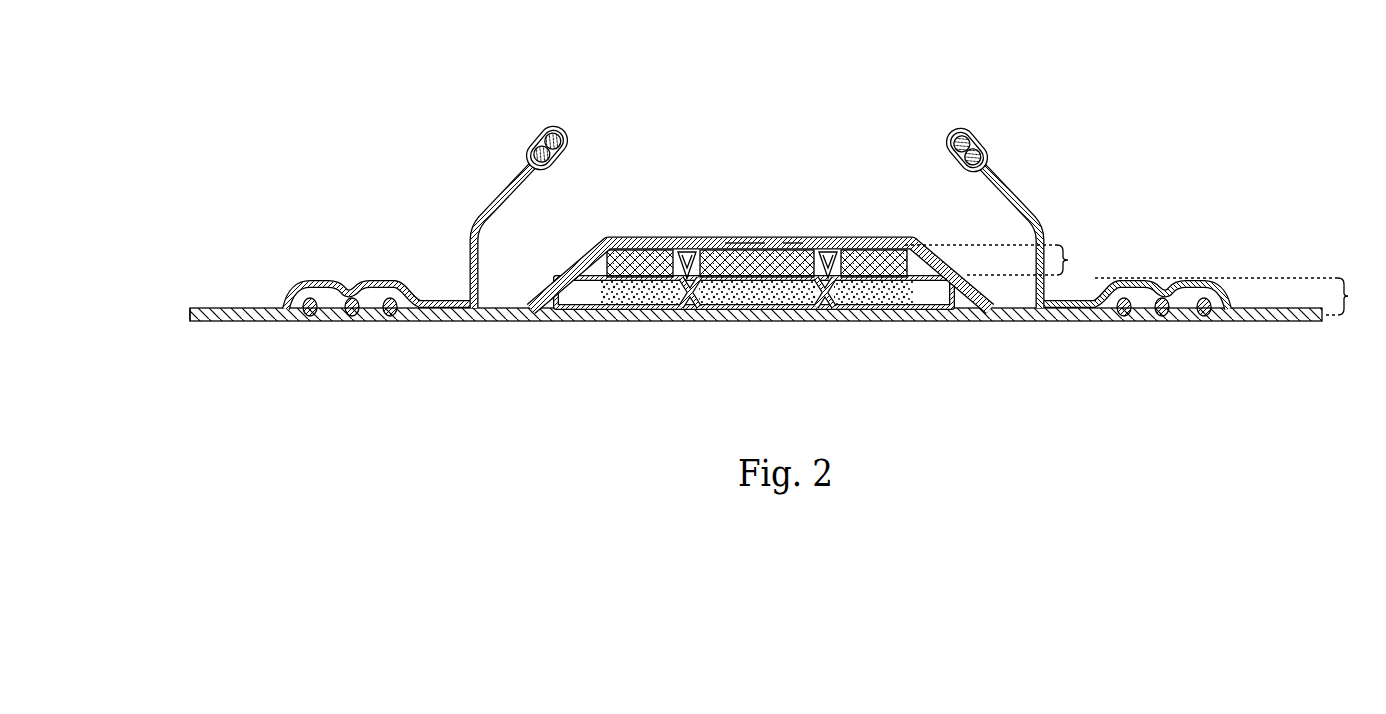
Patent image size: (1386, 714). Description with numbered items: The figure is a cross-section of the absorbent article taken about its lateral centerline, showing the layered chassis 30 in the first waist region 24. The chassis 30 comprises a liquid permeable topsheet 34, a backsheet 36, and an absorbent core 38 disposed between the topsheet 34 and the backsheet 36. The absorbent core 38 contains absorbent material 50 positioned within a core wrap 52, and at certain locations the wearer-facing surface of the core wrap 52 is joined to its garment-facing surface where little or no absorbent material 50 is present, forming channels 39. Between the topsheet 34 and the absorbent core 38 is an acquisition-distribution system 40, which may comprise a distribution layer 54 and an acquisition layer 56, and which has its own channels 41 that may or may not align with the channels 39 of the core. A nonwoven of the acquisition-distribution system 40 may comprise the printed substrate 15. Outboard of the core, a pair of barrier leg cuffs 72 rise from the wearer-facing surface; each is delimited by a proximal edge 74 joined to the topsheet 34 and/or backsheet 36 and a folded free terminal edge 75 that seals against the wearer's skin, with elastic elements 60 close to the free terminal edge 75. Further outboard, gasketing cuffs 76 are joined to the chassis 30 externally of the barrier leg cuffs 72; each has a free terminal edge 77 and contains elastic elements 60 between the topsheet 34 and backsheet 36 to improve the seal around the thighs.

The chassis 30 is at (848, 125).
The backsheet 36 is at (537, 322).
The free terminal edge 77 is at (190, 306).
The gasketing cuff 76 is at (322, 275).
The proximal edge 74 is at (438, 302).
The barrier leg cuff 72 is at (491, 172).
The free terminal edge 75 is at (577, 130).
The elastic element 60 is at (553, 141).
The absorbent material 50 is at (643, 322).
The core wrap 52 is at (938, 322).
The channel 39 is at (693, 322).
The distribution layer 54 is at (672, 250).
The channel 41 is at (693, 250).
The topsheet 34 is at (637, 237).
The acquisition layer 56 is at (738, 237).
The substrate 15 is at (748, 237).
The first waist region 24 is at (793, 237).
The acquisition-distribution system 40 is at (1000, 259).
The absorbent core 38 is at (1234, 296).